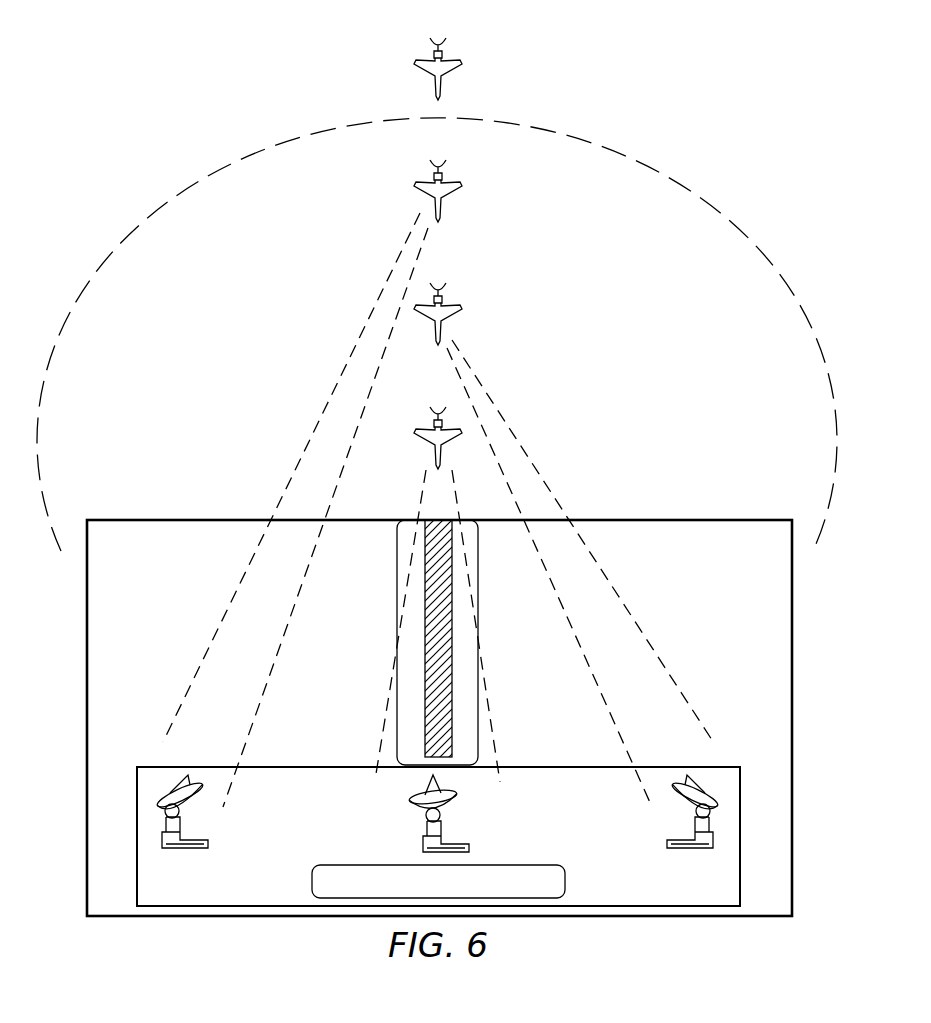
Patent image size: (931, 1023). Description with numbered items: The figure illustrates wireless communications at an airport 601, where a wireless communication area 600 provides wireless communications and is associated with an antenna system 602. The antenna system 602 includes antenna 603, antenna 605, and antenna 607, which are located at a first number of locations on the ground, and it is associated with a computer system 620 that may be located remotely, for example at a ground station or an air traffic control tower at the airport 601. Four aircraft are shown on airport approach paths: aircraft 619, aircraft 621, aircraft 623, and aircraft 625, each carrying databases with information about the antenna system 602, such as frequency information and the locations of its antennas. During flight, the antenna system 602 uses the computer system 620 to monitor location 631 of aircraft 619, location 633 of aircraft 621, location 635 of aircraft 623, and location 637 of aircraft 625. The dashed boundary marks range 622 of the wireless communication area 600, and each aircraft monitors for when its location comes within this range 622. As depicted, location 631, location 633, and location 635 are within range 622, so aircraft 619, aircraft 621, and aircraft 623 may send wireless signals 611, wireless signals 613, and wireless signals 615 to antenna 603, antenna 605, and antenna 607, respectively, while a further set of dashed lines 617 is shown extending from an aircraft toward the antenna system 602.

The wireless communication area 600 is at (174, 314).
The airport 601 is at (680, 537).
The antenna system 602 is at (540, 763).
The antenna 603 is at (423, 850).
The antenna 605 is at (692, 848).
The antenna 607 is at (183, 850).
The wireless signals 611 is at (383, 717).
The wireless signals 613 is at (552, 488).
The wireless signals 615 is at (237, 590).
The beam / signal path 617 is at (508, 680).
The aircraft 619 is at (457, 457).
The computer system 620 is at (312, 880).
The aircraft 621 is at (475, 303).
The range 622 is at (733, 220).
The aircraft 623 is at (475, 182).
The aircraft 625 is at (475, 58).
The location 631 is at (415, 452).
The location 633 is at (420, 347).
The location 635 is at (412, 173).
The location 637 is at (412, 50).